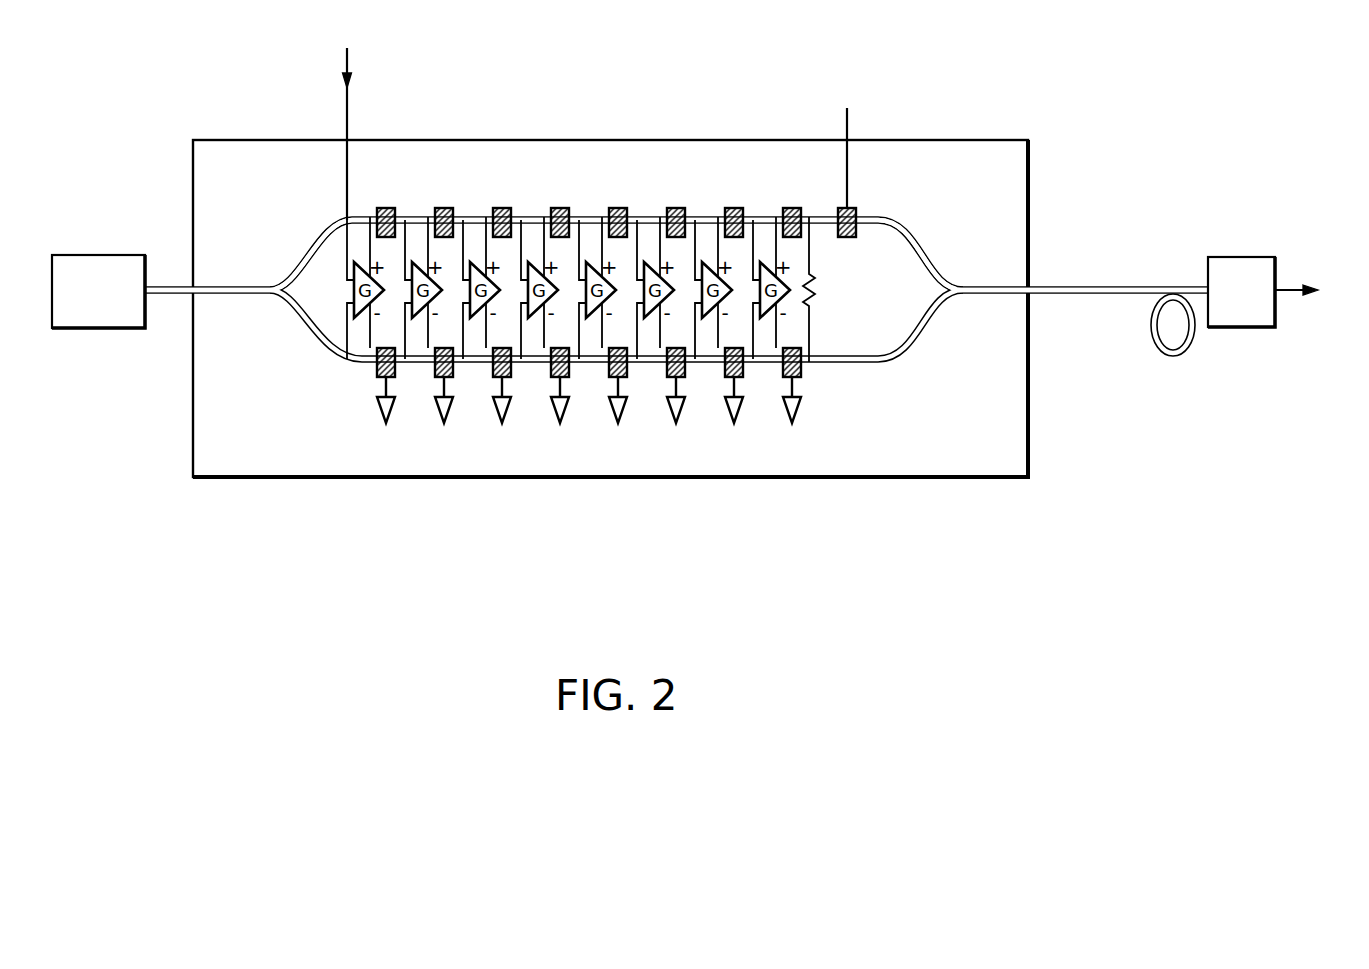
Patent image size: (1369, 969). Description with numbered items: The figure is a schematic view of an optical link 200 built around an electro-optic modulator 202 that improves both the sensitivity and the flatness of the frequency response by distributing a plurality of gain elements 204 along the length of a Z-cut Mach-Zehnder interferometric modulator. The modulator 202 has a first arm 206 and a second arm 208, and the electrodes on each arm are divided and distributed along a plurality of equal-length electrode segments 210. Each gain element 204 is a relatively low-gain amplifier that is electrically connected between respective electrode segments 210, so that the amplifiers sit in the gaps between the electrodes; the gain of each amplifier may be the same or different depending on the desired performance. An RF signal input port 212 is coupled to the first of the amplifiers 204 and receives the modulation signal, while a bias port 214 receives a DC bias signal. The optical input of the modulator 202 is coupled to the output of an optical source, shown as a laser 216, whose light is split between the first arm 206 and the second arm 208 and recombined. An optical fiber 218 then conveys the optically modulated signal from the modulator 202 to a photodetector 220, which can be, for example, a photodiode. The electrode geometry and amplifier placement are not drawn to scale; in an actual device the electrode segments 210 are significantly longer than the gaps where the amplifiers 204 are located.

The optical link 200 is at (623, 64).
The electro-optic modulator 202 is at (618, 197).
The gain elements 204 is at (351, 291).
The first arm 206 is at (313, 253).
The second arm 208 is at (313, 328).
The electrode segments 210 is at (443, 207).
The RF signal input port 212 is at (348, 118).
The bias port 214 is at (882, 100).
The laser 216 is at (77, 316).
The optical fiber 218 is at (1173, 358).
The photodetector 220 is at (1220, 317).